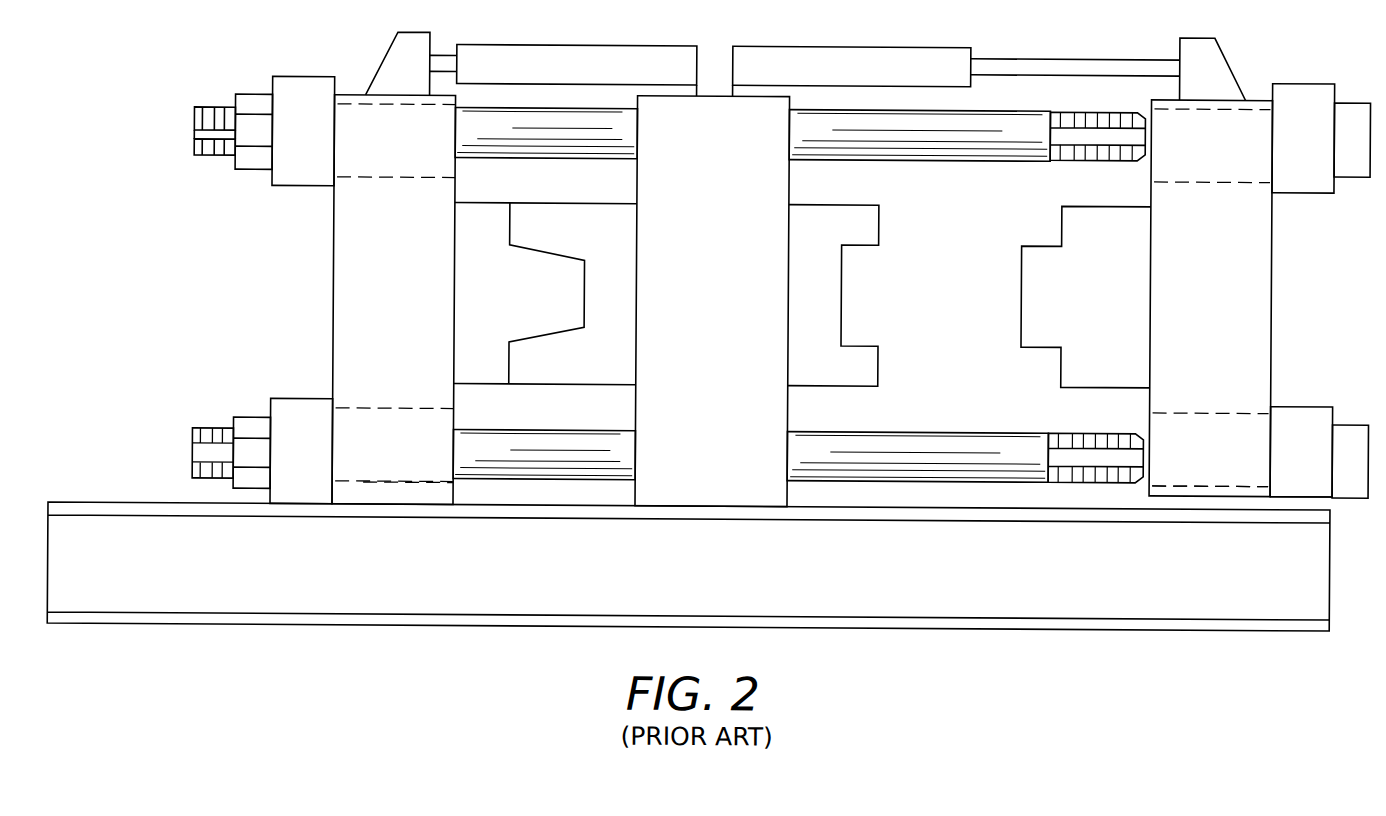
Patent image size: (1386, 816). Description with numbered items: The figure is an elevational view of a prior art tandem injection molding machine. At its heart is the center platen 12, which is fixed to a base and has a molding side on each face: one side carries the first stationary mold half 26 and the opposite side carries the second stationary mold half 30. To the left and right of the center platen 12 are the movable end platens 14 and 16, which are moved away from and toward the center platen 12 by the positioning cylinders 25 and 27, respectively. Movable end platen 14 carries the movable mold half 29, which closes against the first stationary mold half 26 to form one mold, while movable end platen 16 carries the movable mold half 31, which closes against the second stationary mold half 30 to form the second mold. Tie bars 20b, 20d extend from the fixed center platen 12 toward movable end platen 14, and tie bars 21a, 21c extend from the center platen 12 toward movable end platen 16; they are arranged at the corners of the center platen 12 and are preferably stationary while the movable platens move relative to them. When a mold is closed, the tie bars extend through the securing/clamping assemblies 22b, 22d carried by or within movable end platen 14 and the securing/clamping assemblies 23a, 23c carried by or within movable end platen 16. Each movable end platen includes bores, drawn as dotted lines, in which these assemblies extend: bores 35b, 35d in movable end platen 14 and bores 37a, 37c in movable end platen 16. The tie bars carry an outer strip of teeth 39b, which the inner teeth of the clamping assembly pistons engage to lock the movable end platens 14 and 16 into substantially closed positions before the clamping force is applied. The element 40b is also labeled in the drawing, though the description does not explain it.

The center platen 12 is at (720, 298).
The movable end platen 14 is at (412, 311).
The movable end platen 16 is at (1221, 347).
The tie bar 20b is at (220, 154).
The tie bar 20d is at (213, 426).
The tie bar 21a is at (1010, 104).
The tie bar 21c is at (945, 442).
The securing/clamping assembly 22b is at (302, 83).
The securing/clamping assembly 22d is at (297, 405).
The securing/clamping assembly 23a is at (1315, 172).
The securing/clamping assembly 23c is at (1302, 409).
The positioning cylinder 25 is at (630, 50).
The first stationary mold half 26 is at (612, 238).
The positioning cylinder 27 is at (842, 48).
The movable mold half 29 is at (494, 311).
The second stationary mold half 30 is at (857, 223).
The movable mold half 31 is at (1068, 224).
The bore 35b is at (365, 101).
The bore 35d is at (362, 480).
The bore 37a is at (1245, 102).
The bore 37c is at (1242, 481).
The outer strip of teeth 39b is at (210, 145).
The lock nut 40b is at (209, 127).